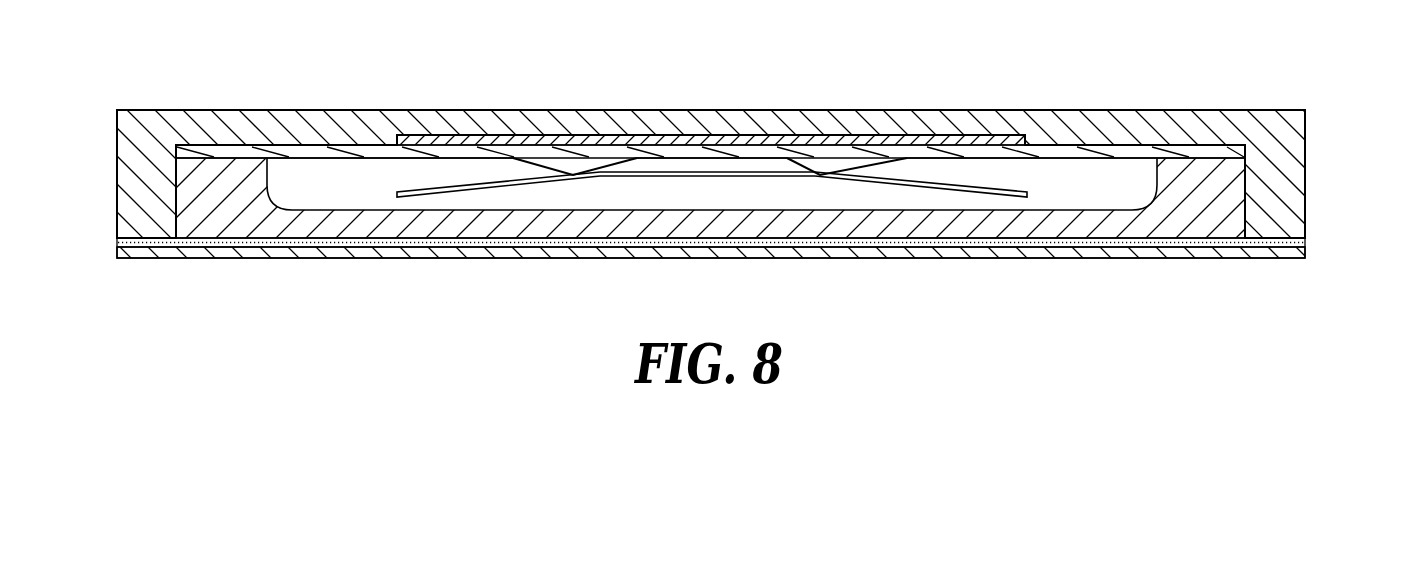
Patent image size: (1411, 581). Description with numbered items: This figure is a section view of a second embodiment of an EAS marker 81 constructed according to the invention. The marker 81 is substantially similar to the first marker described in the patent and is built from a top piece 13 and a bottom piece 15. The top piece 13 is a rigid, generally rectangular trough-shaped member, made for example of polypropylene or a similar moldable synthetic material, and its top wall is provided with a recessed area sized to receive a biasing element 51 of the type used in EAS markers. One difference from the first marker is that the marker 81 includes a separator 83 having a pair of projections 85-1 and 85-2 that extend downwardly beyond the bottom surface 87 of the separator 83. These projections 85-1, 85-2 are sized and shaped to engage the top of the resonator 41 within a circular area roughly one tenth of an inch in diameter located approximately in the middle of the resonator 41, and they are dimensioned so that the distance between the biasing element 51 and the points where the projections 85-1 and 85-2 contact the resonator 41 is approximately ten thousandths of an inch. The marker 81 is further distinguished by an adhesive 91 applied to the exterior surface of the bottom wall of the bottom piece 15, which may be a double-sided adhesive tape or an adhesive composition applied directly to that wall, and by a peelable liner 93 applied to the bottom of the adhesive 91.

The EAS marker 81 is at (400, 83).
The top piece 13 is at (1175, 115).
The bottom piece 15 is at (207, 222).
The biasing element 51 is at (762, 140).
The separator 83 is at (937, 152).
The bottom surface 87 is at (357, 150).
The resonator 41 is at (978, 190).
The projection 85-1 is at (842, 168).
The projection 85-2 is at (578, 165).
The adhesive 91 is at (1305, 245).
The peelable liner 93 is at (1185, 255).